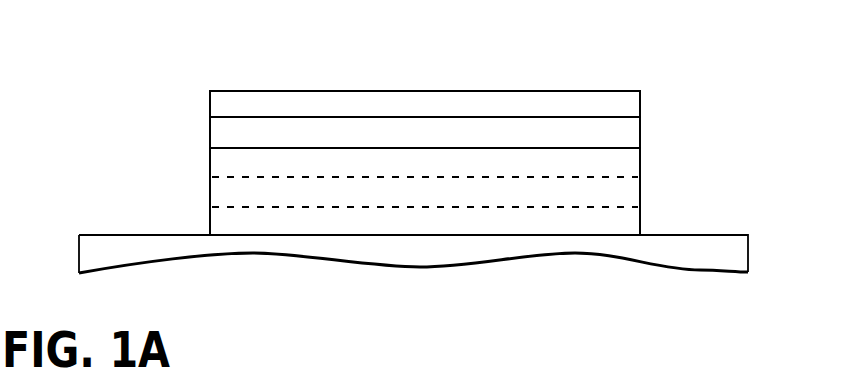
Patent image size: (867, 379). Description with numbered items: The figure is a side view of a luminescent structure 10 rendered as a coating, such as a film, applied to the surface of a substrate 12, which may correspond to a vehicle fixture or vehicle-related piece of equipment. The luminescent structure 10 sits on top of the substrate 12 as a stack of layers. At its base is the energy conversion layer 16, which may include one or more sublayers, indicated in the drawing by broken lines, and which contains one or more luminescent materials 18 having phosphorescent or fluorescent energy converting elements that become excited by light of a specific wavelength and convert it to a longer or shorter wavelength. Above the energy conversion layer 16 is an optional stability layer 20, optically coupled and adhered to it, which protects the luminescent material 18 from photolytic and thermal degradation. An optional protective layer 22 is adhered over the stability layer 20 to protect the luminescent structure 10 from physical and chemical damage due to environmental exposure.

The luminescent structure 10 is at (573, 63).
The substrate 12 is at (688, 234).
The energy conversion layer 16 is at (210, 188).
The luminescent material 18 is at (592, 192).
The stability layer 20 is at (210, 133).
The protective layer 22 is at (305, 91).